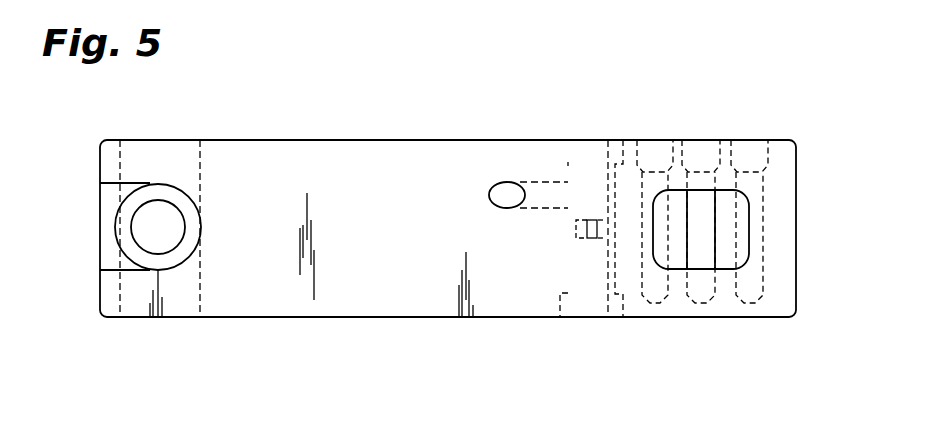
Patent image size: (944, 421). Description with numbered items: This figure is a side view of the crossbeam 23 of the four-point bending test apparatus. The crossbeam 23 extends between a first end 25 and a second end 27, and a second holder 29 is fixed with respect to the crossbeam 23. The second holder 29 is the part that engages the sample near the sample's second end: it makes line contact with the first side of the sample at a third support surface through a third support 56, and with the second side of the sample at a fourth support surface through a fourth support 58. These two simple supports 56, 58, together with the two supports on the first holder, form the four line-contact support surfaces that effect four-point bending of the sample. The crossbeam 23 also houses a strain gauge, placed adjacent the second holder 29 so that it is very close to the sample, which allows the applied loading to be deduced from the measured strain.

The crossbeam 23 is at (382, 158).
The first end 25 is at (108, 158).
The second end 27 is at (728, 308).
The second holder 29 is at (745, 224).
The third support 56 is at (763, 294).
The fourth support 58 is at (665, 303).